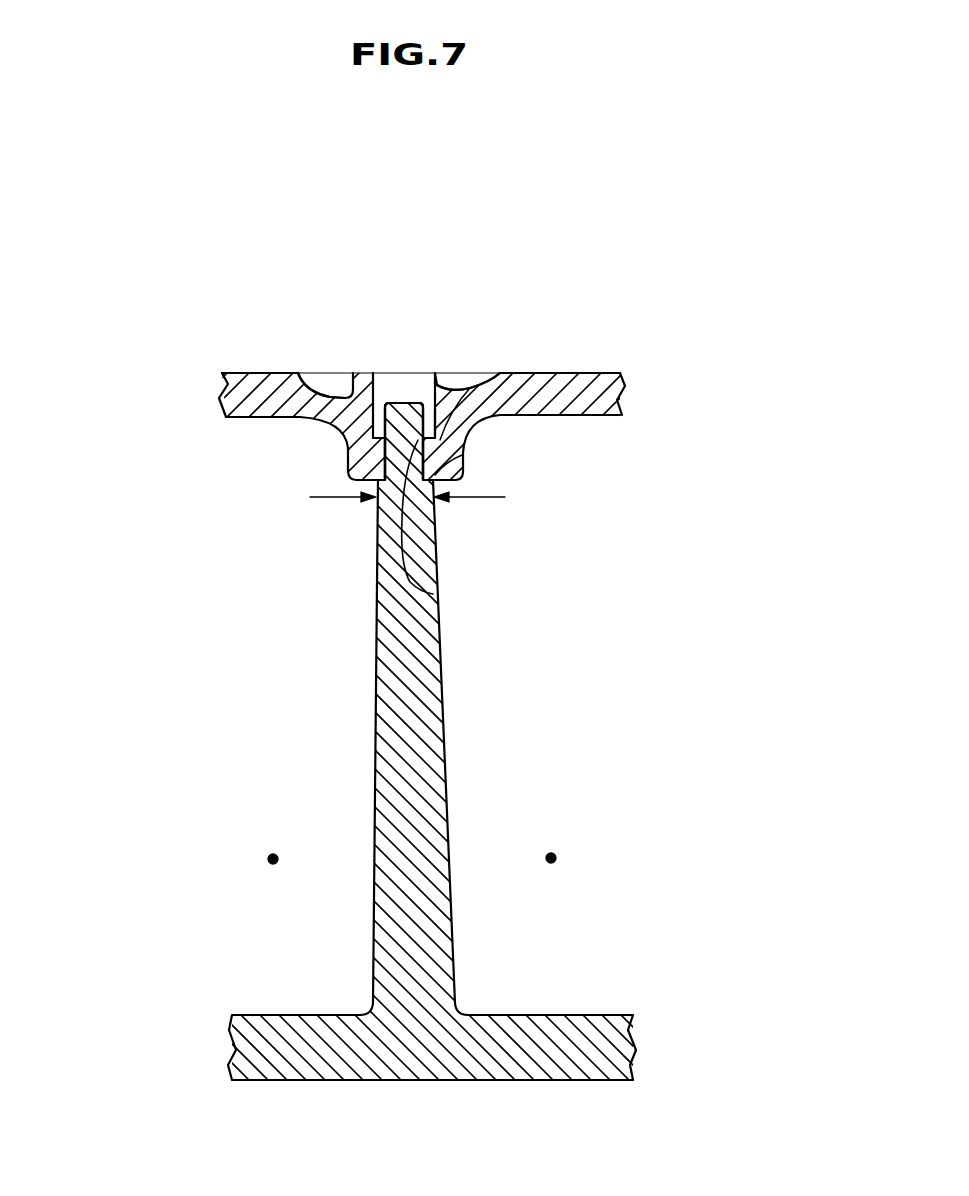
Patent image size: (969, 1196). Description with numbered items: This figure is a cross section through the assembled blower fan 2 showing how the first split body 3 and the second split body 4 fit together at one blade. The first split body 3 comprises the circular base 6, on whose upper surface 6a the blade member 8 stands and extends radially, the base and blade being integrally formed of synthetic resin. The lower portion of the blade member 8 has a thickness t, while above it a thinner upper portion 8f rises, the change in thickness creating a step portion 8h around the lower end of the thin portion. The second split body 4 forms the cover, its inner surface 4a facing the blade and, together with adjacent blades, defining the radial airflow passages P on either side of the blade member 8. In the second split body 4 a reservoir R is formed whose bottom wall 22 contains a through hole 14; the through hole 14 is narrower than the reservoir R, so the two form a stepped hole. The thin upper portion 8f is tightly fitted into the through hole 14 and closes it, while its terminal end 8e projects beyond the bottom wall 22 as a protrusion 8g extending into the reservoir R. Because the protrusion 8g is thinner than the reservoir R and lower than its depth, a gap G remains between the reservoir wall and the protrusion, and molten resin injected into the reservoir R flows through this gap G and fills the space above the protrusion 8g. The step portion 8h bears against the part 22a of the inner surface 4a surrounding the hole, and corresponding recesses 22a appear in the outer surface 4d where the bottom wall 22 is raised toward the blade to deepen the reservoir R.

The blower fan 2 is at (333, 255).
The second split body 4 is at (578, 366).
The outer surface of the second split body 4d is at (263, 372).
The inner surface of the second split body 4a is at (585, 416).
The recess 22a is at (326, 382).
The gap G is at (429, 425).
The reservoir R is at (410, 388).
The blade member 8 is at (425, 690).
The upper portion of the blade member 8e is at (394, 400).
The protrusion 8g is at (400, 423).
The thin upper portion 8f is at (403, 448).
The step portion 8h is at (468, 452).
The bottom wall 22 is at (348, 467).
The through hole 14 is at (424, 593).
The thickness of the lower portion of the blade member t is at (478, 498).
The airflow passage P is at (268, 859).
The circular base 6 is at (342, 1045).
The upper surface of the circular base 6a is at (290, 1014).
The first split body 3 is at (498, 1085).